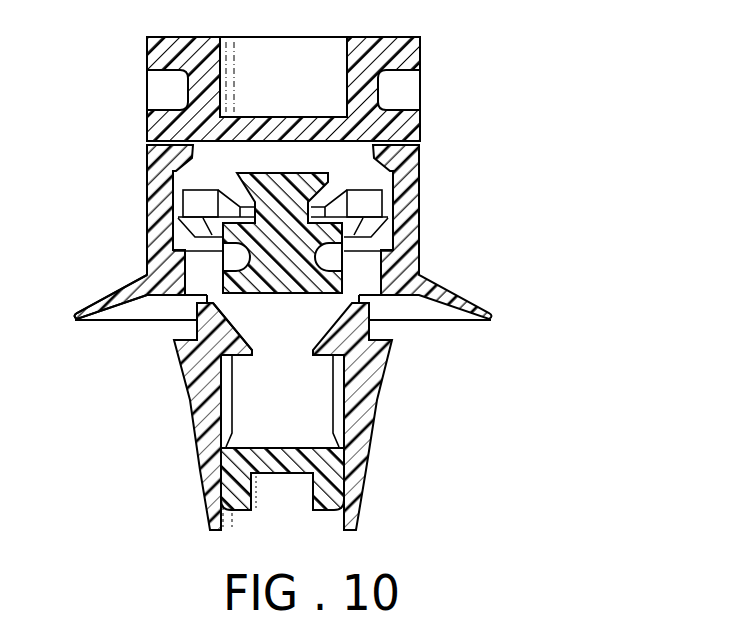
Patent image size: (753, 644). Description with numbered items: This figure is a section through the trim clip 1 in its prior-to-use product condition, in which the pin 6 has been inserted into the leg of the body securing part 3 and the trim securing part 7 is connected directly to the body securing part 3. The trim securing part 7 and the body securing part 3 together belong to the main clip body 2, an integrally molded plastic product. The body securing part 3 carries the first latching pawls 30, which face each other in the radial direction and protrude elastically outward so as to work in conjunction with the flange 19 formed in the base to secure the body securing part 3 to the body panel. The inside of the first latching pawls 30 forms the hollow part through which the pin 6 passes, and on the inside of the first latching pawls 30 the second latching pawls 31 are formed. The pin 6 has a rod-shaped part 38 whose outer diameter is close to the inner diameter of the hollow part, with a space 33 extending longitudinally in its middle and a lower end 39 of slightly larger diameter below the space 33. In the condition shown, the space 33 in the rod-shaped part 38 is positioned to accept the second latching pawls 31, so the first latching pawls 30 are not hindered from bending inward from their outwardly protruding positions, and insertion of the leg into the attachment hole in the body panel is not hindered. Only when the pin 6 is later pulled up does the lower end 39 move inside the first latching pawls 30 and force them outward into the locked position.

The trim clip 1 is at (531, 144).
The main clip body 2 is at (443, 281).
The body securing part 3 is at (266, 425).
The pin 6 is at (335, 213).
The trim securing part 7 is at (147, 58).
The flange 19 is at (107, 297).
The first latching pawls 30 is at (173, 348).
The second latching pawls 31 is at (253, 352).
The space 33 is at (293, 392).
The rod-shaped part 38 is at (230, 473).
The lower end 39 is at (216, 510).